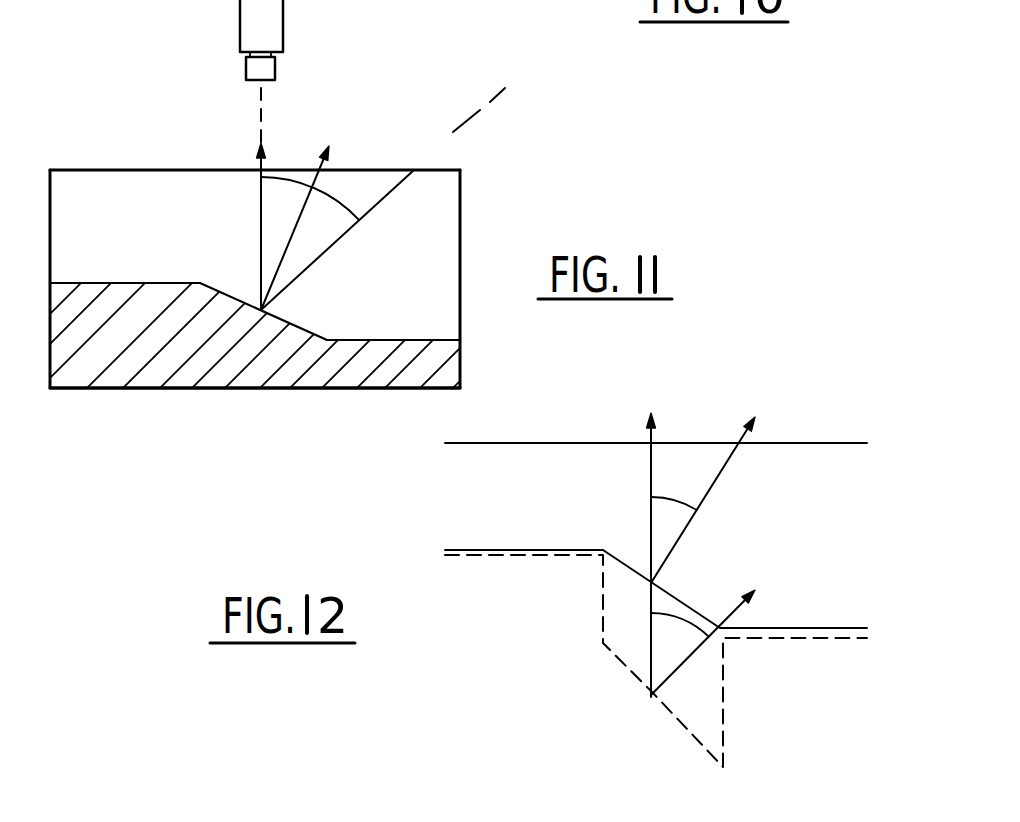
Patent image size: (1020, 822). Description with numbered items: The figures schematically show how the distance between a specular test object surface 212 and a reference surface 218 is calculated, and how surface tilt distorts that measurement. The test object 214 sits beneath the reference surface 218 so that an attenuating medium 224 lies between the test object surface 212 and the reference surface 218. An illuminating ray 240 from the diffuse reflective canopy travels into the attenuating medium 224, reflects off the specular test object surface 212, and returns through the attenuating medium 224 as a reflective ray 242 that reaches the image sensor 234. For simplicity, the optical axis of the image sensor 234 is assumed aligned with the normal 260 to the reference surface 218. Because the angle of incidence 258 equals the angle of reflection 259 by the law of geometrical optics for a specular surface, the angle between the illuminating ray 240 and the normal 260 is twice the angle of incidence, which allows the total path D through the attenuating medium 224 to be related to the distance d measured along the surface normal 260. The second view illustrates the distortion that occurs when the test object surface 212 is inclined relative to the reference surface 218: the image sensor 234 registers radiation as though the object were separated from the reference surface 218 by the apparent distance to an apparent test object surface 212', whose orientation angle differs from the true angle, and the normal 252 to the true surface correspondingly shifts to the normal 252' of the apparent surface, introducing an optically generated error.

In FIG. 11, the specular test object surface 212 is at (255, 308).
In FIG. 12, the specular test object surface 212 is at (656, 568).
In FIG. 12, the apparent test object surface 212' is at (656, 661).
In FIG. 11, the test object 214 is at (173, 375).
In FIG. 11, the reference surface 218 is at (450, 170).
In FIG. 12, the reference surface 218 is at (545, 428).
In FIG. 11, the attenuating medium 224 is at (450, 198).
In FIG. 11, the image sensor 234 is at (283, 30).
In FIG. 11, the illuminating ray 240 is at (502, 84).
In FIG. 11, the reflective ray 242 is at (261, 98).
In FIG. 11, the normal to test object surface 252 is at (349, 179).
In FIG. 12, the normal to test object surface 252 is at (728, 500).
In FIG. 12, the normal to apparent test object surface 252' is at (722, 619).
In FIG. 11, the angle of incidence 258 is at (343, 203).
In FIG. 11, the angle of reflection 259 is at (287, 175).
In FIG. 11, the normal to reference surface 260 is at (258, 207).
In FIG. 12, the normal to reference surface 260 is at (649, 466).